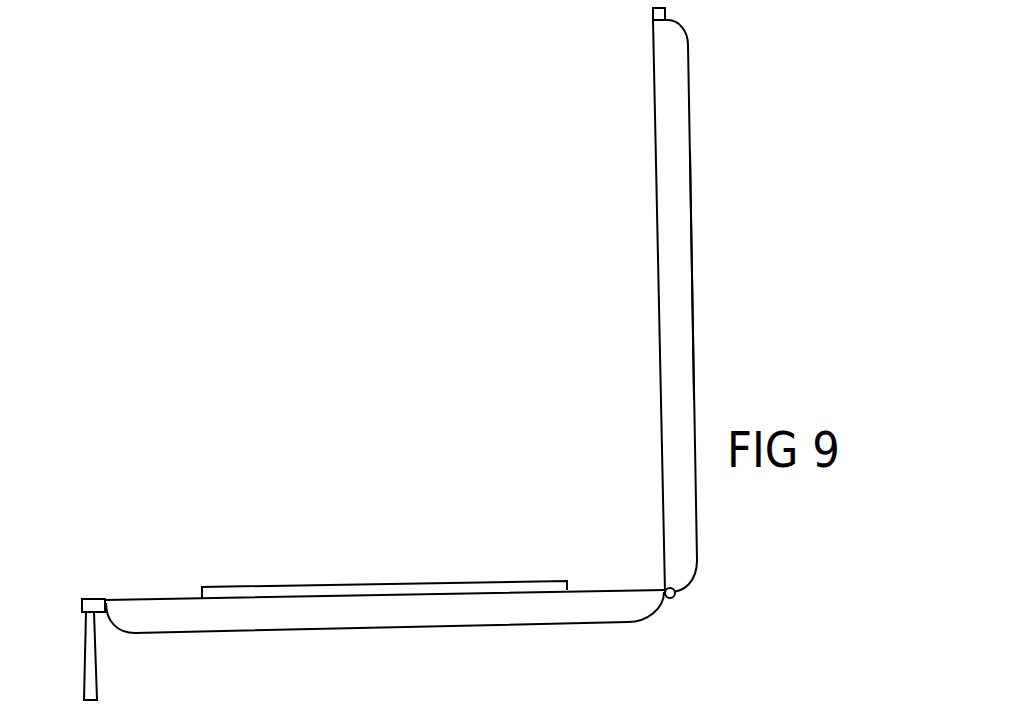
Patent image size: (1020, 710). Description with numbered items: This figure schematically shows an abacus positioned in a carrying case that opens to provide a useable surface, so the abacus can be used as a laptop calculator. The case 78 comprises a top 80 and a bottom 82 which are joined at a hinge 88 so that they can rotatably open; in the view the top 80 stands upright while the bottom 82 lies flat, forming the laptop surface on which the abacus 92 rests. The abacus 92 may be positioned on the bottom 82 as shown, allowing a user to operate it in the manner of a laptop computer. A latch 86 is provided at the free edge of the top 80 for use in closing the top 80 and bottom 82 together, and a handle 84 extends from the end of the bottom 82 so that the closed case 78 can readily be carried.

The case 78 is at (697, 185).
The top 80 is at (692, 256).
The bottom 82 is at (457, 628).
The handle 84 is at (83, 677).
The latch 86 is at (668, 13).
The hinge 88 is at (677, 596).
The abacus 92 is at (368, 583).